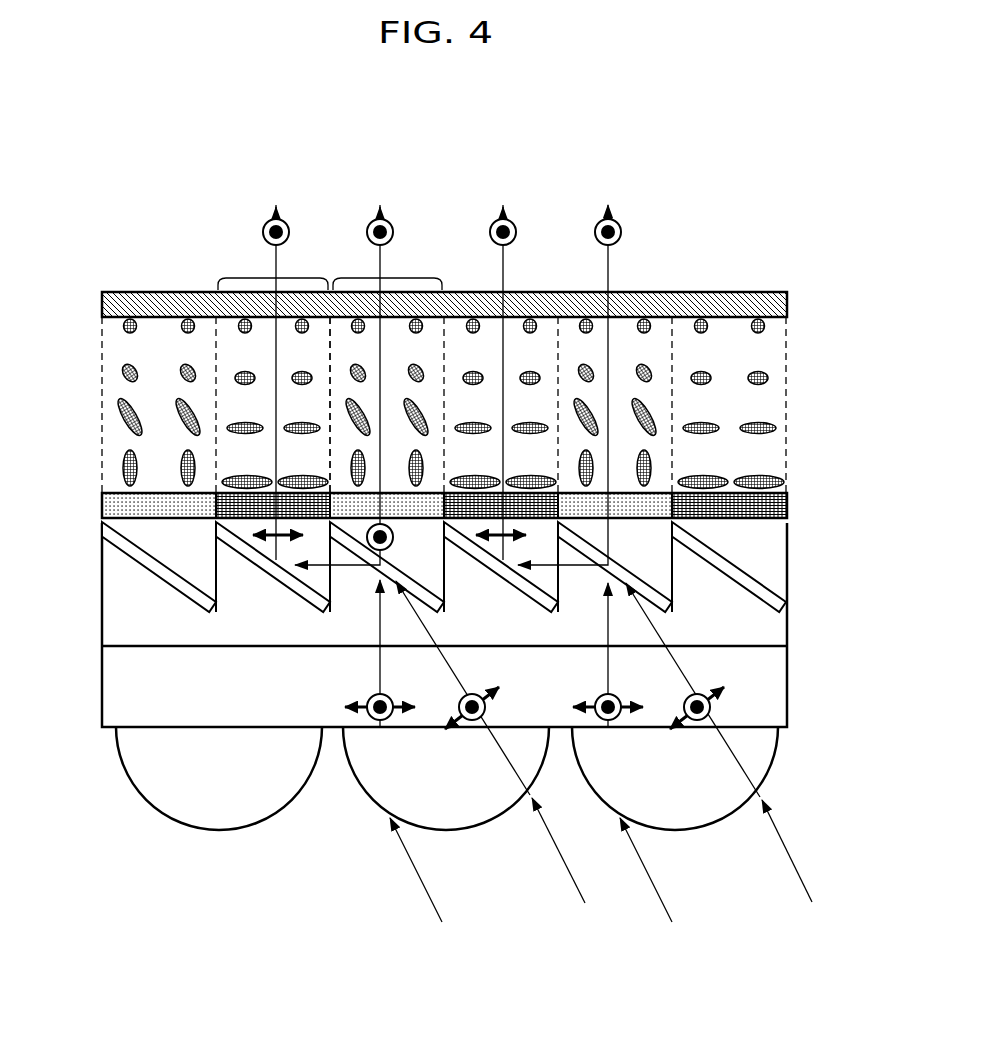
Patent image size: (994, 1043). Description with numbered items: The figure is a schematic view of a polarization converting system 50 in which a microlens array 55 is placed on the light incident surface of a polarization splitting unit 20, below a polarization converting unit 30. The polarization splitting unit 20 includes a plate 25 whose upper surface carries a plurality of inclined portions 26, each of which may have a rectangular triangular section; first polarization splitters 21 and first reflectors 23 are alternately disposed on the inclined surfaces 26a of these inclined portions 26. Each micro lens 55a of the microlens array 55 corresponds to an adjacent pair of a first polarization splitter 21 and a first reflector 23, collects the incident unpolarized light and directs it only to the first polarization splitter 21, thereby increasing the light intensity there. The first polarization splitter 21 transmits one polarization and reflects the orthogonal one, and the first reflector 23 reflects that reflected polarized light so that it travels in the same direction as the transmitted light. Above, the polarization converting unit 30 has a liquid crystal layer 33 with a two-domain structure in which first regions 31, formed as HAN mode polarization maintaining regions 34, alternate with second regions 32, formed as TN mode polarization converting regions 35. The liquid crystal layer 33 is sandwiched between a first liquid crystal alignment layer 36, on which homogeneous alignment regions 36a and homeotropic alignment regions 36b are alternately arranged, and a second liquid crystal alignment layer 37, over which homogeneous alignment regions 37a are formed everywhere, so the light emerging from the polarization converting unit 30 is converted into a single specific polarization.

The polarization converting system 50 is at (128, 283).
The polarization converting unit 30 is at (797, 292).
The second liquid crystal alignment layer 37 is at (98, 298).
The homogeneous alignment region 37a is at (658, 304).
The liquid crystal layer 33 is at (108, 436).
The polarization maintaining region 34 is at (426, 359).
The polarization converting region 35 is at (313, 362).
The first liquid crystal alignment layer 36 is at (99, 508).
The homogeneous alignment region 36a is at (303, 496).
The homeotropic alignment region 36b is at (431, 493).
The second region 32 is at (253, 279).
The first region 31 is at (405, 279).
The polarization splitting unit 20 is at (797, 523).
The plate 25 is at (121, 625).
The inclined portion 26 is at (115, 551).
The inclined surface 26a is at (142, 566).
The first reflector 23 is at (300, 574).
The first polarization splitter 21 is at (407, 570).
The microlens array 55 is at (133, 818).
The micro lens 55a is at (368, 780).